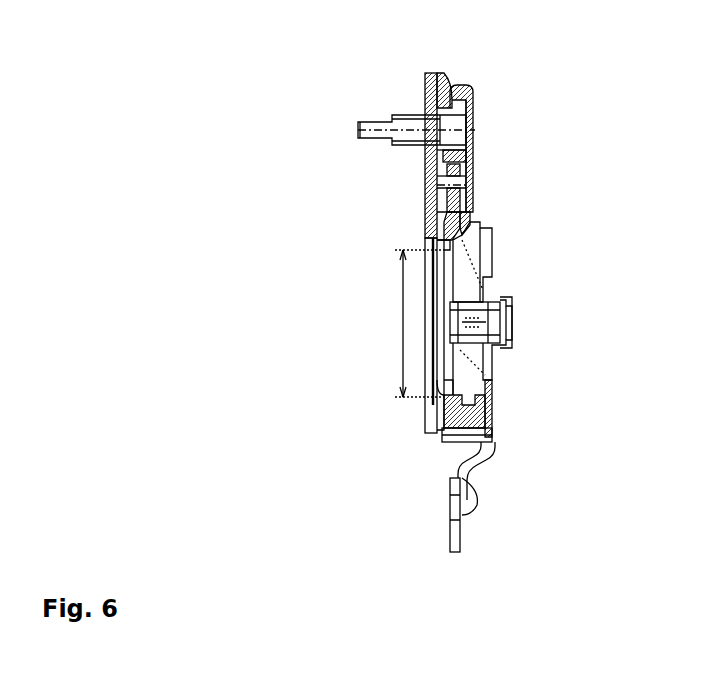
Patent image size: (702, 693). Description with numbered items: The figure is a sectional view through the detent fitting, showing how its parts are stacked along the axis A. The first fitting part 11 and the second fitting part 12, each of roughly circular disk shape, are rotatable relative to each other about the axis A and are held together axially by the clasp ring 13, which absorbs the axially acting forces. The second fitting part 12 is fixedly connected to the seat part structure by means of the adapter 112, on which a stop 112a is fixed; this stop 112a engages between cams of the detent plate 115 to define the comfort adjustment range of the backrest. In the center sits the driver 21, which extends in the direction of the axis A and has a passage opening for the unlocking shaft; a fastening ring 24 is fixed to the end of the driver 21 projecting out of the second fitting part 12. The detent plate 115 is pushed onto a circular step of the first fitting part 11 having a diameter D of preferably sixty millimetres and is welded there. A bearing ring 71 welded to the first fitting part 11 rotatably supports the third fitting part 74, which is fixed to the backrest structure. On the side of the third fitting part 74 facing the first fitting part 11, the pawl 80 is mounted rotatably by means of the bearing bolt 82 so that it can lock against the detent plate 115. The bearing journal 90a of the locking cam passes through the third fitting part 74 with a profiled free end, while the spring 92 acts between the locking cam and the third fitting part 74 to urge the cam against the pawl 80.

The third fitting part 74 is at (430, 98).
The spring 92 is at (447, 106).
The bearing journal 90a is at (400, 115).
The pawl 80 is at (457, 158).
The bearing bolt 82 is at (453, 170).
The detent plate 115 is at (453, 232).
The bearing ring 71 is at (437, 252).
The clasp ring 13 is at (465, 230).
The driver 21 is at (484, 305).
The axis A is at (515, 320).
The fastening ring 24 is at (511, 345).
The second fitting part 12 is at (483, 352).
The first fitting part 11 is at (462, 377).
The stop 112a is at (480, 433).
The adapter 112 is at (455, 543).
The diameter D is at (402, 323).